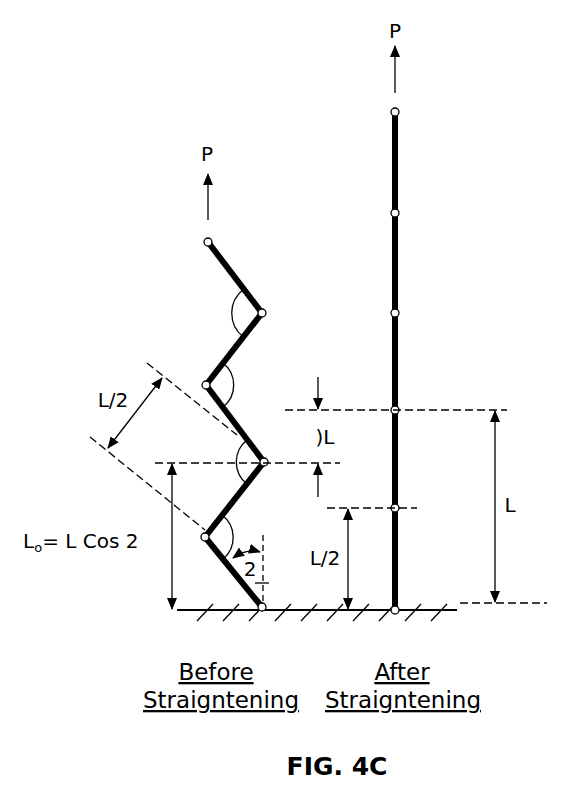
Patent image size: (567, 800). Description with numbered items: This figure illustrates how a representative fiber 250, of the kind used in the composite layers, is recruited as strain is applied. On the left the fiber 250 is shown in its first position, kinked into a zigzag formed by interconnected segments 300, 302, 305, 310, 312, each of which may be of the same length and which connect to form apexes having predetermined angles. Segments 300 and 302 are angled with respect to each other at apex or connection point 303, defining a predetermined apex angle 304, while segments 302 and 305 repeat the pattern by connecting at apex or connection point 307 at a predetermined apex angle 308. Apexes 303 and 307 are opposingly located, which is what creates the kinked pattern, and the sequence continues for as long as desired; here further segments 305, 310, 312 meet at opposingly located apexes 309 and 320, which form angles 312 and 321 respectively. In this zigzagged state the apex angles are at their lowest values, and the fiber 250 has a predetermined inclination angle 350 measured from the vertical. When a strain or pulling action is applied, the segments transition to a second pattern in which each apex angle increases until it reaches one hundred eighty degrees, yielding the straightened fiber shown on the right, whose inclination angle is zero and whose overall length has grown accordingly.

The fiber 250 is at (182, 303).
The segment 300 is at (233, 275).
The segment 302 is at (222, 350).
The apex or connection point 303 is at (266, 313).
The apex angle 304 is at (228, 313).
The segment 305 is at (237, 417).
The apex or connection point 307 is at (201, 385).
The apex angle 308 is at (237, 385).
The apex 309 is at (265, 466).
The segment 310 is at (227, 505).
The segment 312 is at (232, 455).
The apex 320 is at (201, 537).
The angle 321 is at (237, 532).
The inclination angle 350 is at (258, 584).